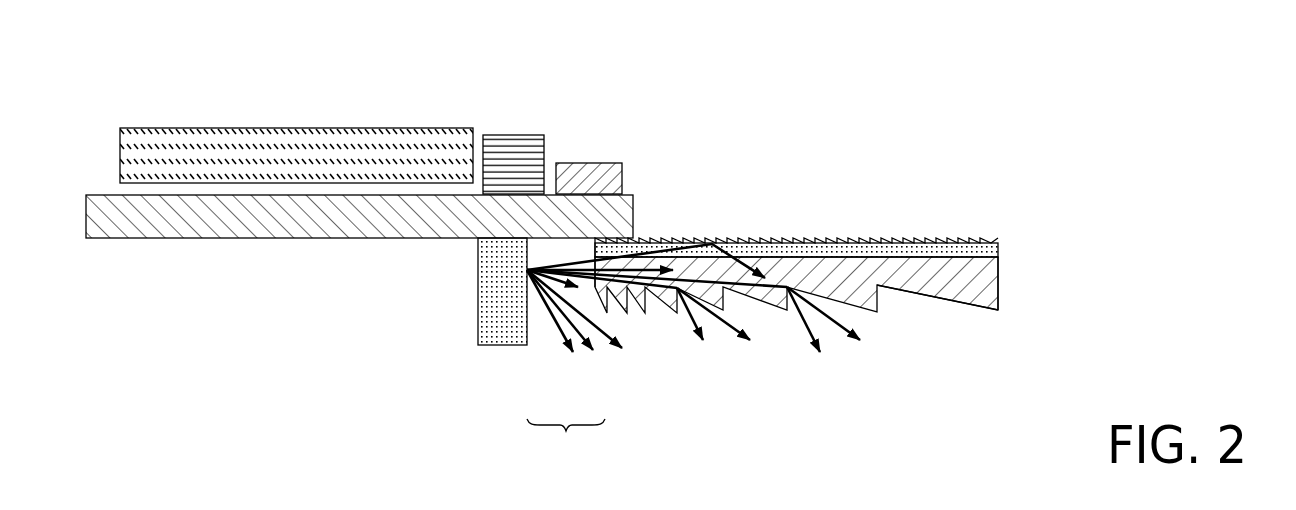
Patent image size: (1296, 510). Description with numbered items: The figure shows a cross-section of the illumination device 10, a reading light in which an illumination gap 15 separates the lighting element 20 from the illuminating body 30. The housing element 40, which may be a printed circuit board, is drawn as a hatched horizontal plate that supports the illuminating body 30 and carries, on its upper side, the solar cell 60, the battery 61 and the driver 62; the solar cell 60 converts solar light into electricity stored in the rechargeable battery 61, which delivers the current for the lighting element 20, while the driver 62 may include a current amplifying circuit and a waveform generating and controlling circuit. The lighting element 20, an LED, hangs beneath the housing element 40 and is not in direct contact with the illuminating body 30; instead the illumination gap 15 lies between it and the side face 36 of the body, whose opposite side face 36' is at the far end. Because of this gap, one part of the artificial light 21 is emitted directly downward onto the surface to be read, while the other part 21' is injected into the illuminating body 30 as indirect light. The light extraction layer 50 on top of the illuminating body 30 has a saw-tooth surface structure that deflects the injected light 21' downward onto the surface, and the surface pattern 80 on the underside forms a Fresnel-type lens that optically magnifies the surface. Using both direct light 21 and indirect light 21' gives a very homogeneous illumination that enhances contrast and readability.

The illumination device 10 is at (917, 36).
The illumination gap 15 is at (566, 441).
The lighting element 20 is at (483, 312).
The artificial light 21 is at (647, 339).
The indirect artificial light 21' is at (693, 288).
The illuminating body 30 is at (1015, 233).
The side face 36 is at (499, 265).
The side face 36' is at (1049, 283).
The housing element 40 is at (168, 232).
The light extraction layer 50 is at (928, 231).
The solar cell 60 is at (302, 146).
The battery 61 is at (512, 144).
The driver 62 is at (586, 161).
The surface pattern 80 is at (971, 318).